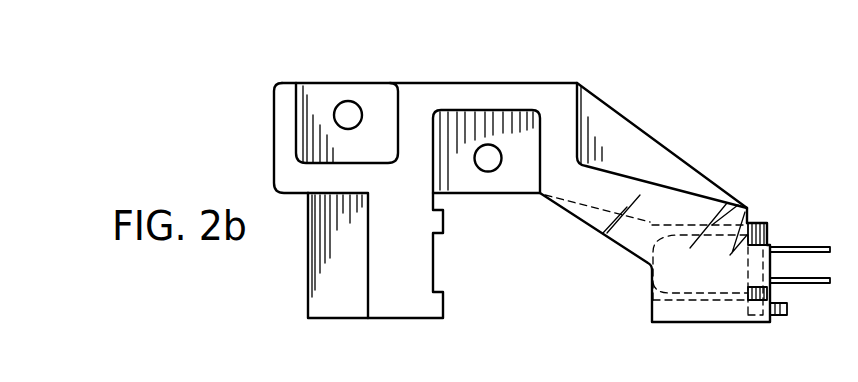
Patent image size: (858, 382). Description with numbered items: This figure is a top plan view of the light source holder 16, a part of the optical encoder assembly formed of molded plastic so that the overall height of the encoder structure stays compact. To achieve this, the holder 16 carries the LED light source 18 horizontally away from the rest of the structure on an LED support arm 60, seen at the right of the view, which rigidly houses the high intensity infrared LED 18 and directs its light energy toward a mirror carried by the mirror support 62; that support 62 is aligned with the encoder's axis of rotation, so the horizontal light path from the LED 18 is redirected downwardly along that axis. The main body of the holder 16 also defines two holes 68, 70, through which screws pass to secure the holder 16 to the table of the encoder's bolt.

The light source holder 16 is at (538, 70).
The LED light source 18 is at (758, 223).
The LED support arm 60 is at (683, 206).
The mirror support 62 is at (410, 310).
The hole 68 is at (350, 112).
The hole 70 is at (489, 163).